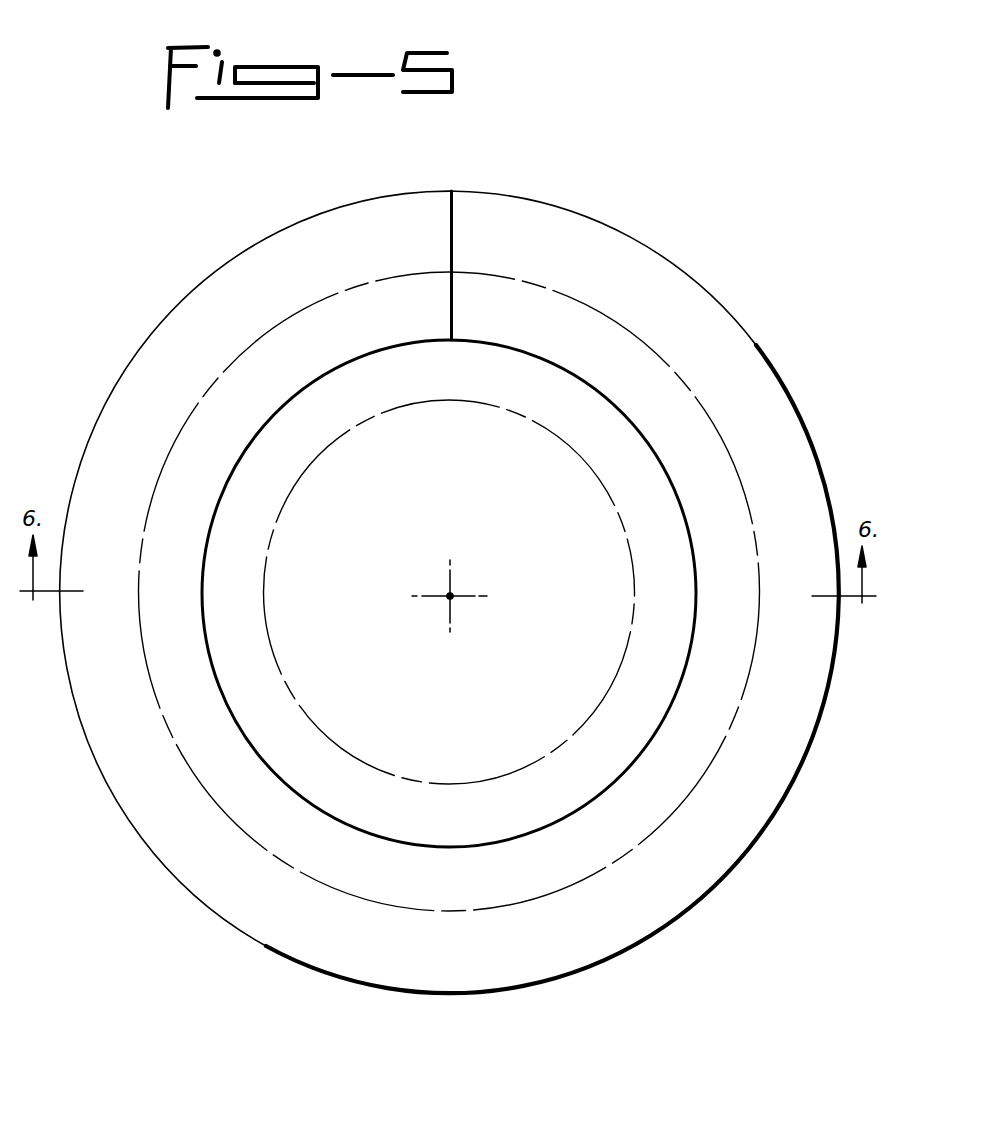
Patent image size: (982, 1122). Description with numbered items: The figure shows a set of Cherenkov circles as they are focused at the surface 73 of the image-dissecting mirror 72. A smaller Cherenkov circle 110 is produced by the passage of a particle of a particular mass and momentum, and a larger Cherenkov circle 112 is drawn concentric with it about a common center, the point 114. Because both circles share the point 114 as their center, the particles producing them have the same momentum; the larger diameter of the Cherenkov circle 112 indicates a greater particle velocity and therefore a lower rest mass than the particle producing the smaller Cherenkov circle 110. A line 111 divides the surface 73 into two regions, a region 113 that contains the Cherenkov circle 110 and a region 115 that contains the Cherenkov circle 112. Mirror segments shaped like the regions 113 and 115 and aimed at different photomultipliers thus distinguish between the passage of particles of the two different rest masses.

The mirror 72 is at (767, 355).
The surface 73 is at (693, 307).
The Cherenkov circle 110 is at (343, 440).
The line 111 is at (512, 348).
The Cherenkov circle 112 is at (537, 283).
The region 113 is at (450, 826).
The point 114 is at (441, 605).
The region 115 is at (415, 322).